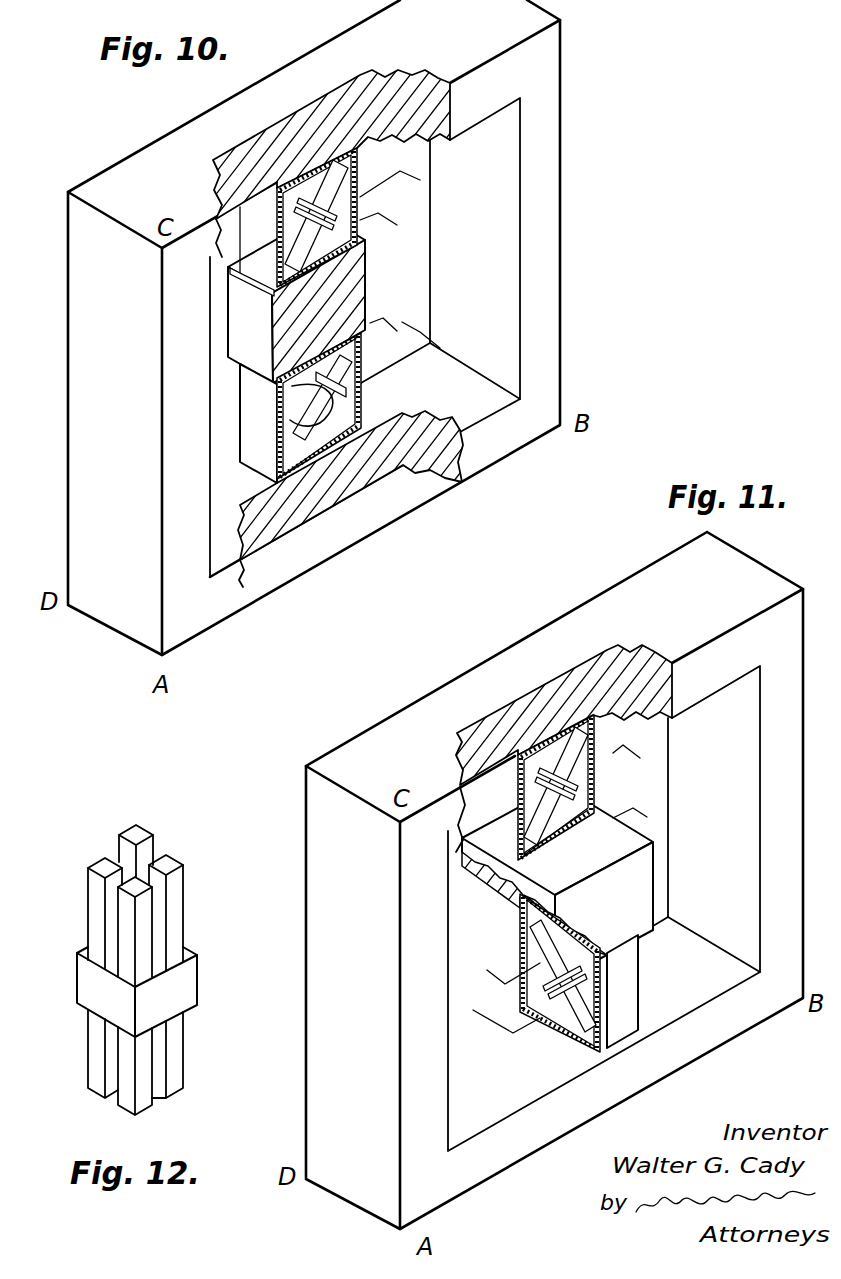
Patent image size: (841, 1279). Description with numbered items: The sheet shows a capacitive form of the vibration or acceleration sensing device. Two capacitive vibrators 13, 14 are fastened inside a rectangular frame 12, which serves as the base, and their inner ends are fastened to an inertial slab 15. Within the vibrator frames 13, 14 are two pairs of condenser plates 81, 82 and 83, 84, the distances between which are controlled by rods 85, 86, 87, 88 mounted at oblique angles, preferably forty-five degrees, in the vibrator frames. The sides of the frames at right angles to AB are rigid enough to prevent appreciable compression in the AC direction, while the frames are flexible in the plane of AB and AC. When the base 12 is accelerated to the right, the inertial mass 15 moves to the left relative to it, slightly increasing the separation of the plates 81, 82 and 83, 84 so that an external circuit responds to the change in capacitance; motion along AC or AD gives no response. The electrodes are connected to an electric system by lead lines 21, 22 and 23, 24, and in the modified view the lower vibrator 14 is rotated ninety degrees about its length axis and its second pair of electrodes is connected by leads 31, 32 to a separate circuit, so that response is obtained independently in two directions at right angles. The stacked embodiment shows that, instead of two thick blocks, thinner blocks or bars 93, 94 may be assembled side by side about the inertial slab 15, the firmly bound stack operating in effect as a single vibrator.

In FIG. 10, the rectangular frame 12 is at (550, 120).
In FIG. 11, the rectangular frame 12 is at (642, 588).
In FIG. 10, the capacitive vibrator 13 is at (237, 242).
In FIG. 11, the capacitive vibrator 13 is at (483, 812).
In FIG. 10, the capacitive vibrator 14 is at (246, 440).
In FIG. 11, the capacitive vibrator 14 is at (630, 960).
In FIG. 10, the inertial slab 15 is at (243, 336).
In FIG. 11, the inertial slab 15 is at (637, 882).
In FIG. 12, the inertial slab 15 is at (88, 984).
In FIG. 10, the lead line 21 is at (387, 220).
In FIG. 11, the lead line 21 is at (650, 820).
In FIG. 10, the lead line 22 is at (410, 175).
In FIG. 11, the lead line 22 is at (640, 758).
In FIG. 10, the lead line 23 is at (388, 322).
In FIG. 10, the lead line 24 is at (417, 327).
In FIG. 11, the lead 31 is at (473, 1010).
In FIG. 11, the lead 32 is at (487, 970).
In FIG. 10, the condenser plate 81 is at (310, 175).
In FIG. 11, the condenser plate 81 is at (525, 708).
In FIG. 10, the condenser plate 82 is at (283, 233).
In FIG. 11, the condenser plate 82 is at (520, 800).
In FIG. 10, the condenser plate 83 is at (322, 412).
In FIG. 11, the condenser plate 83 is at (533, 985).
In FIG. 10, the condenser plate 84 is at (360, 406).
In FIG. 11, the condenser plate 84 is at (585, 973).
In FIG. 10, the rod 85 is at (340, 185).
In FIG. 11, the rod 85 is at (555, 720).
In FIG. 10, the rod 86 is at (256, 272).
In FIG. 11, the rod 86 is at (535, 828).
In FIG. 10, the rod 87 is at (285, 412).
In FIG. 11, the rod 87 is at (532, 945).
In FIG. 10, the rod 88 is at (352, 432).
In FIG. 11, the rod 88 is at (575, 1037).
In FIG. 12, the thin blocks or bars 93 is at (87, 880).
In FIG. 12, the thin blocks or bars 94 is at (92, 1063).